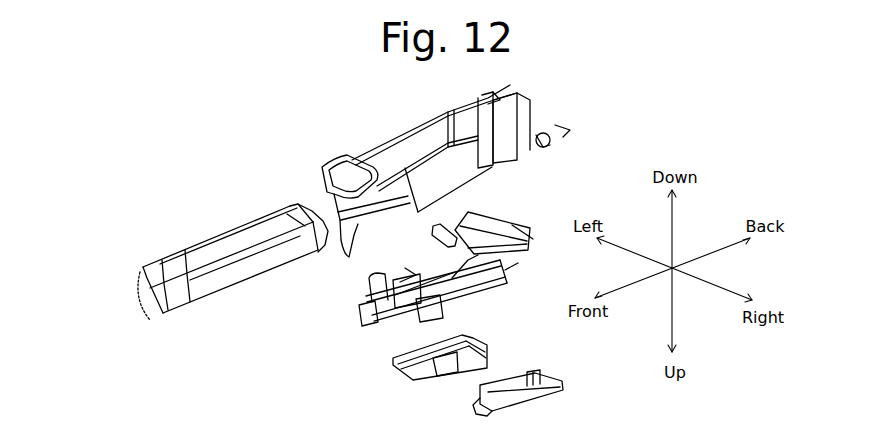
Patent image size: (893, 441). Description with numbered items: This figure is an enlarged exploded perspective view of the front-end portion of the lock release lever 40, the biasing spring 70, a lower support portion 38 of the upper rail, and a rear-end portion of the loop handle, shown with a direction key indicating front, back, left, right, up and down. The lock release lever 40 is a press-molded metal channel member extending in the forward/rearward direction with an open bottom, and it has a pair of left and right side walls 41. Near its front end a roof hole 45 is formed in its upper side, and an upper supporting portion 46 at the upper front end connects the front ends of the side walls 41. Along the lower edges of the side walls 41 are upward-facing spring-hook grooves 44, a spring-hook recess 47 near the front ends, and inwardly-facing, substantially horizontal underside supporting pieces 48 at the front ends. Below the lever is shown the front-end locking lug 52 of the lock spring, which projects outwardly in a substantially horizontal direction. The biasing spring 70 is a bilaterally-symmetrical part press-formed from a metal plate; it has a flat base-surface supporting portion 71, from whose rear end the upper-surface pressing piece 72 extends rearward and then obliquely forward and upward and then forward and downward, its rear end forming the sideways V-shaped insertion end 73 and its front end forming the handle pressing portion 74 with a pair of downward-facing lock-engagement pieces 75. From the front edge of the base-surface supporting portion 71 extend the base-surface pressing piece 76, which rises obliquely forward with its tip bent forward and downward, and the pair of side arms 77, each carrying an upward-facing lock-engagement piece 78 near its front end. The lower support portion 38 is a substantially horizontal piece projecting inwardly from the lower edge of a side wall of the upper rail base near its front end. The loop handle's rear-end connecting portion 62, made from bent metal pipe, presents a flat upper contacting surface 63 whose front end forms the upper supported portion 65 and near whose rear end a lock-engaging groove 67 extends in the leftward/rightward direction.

The lower support portion 38 is at (448, 380).
The lock release lever 40 is at (540, 103).
The side wall 41 is at (563, 130).
The spring-hook groove 44 is at (549, 153).
The roof hole 45 is at (380, 143).
The upper supporting portion 46 is at (332, 158).
The spring-hook recess 47 is at (410, 160).
The underside supporting piece 48 is at (348, 247).
The front-end locking lug 52 is at (555, 146).
The rear-end connecting portion 62 is at (242, 282).
The upper contacting surface 63 is at (230, 240).
The upper supported portion 65 is at (183, 262).
The lock-engaging groove 67 is at (278, 212).
The biasing spring 70 is at (505, 285).
The base-surface supporting portion 71 is at (487, 293).
The upper-surface pressing piece 72 is at (493, 218).
The insertion end 73 is at (532, 233).
The handle pressing portion 74 is at (452, 228).
The downward-facing lock-engagement piece 75 is at (518, 263).
The base-surface pressing piece 76 is at (375, 323).
The side arm 77 is at (399, 284).
The upward-facing lock-engagement piece 78 is at (378, 272).